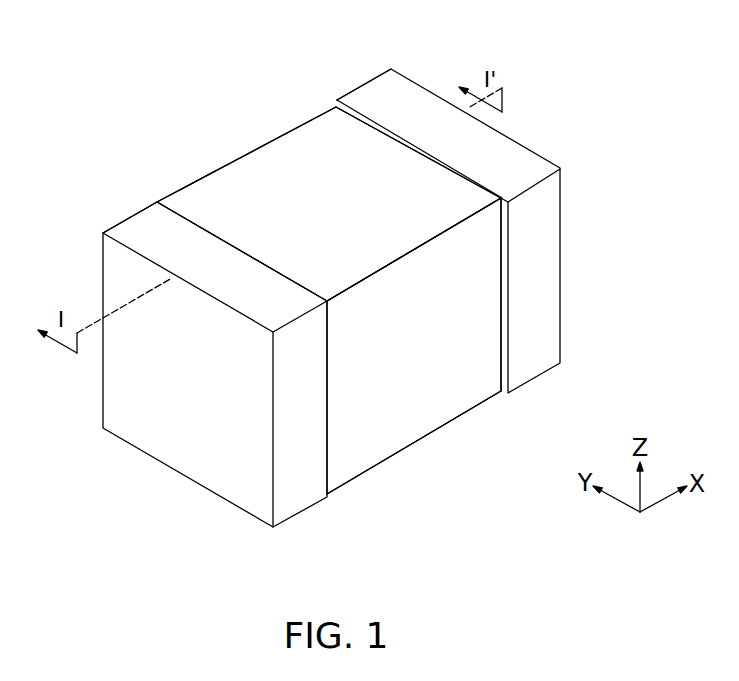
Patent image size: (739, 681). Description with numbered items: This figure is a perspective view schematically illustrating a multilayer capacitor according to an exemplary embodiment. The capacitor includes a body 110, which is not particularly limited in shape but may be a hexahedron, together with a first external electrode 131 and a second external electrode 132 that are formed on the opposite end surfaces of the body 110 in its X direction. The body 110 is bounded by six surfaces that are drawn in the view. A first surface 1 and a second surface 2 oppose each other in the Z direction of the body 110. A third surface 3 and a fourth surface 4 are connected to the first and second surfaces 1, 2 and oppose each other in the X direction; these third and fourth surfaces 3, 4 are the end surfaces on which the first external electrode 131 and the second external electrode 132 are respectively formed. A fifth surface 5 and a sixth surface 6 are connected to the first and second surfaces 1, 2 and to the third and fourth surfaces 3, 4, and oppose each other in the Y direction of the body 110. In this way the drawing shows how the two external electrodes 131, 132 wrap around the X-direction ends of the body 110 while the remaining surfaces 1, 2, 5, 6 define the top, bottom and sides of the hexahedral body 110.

The first surface 1 is at (316, 273).
The body 110 is at (262, 168).
The second surface 2 is at (328, 160).
The fifth surface 5 is at (469, 343).
The sixth surface 6 is at (192, 185).
The third surface 3 is at (150, 378).
The fourth surface 4 is at (539, 144).
The first external electrode 131 is at (133, 211).
The second external electrode 132 is at (370, 75).